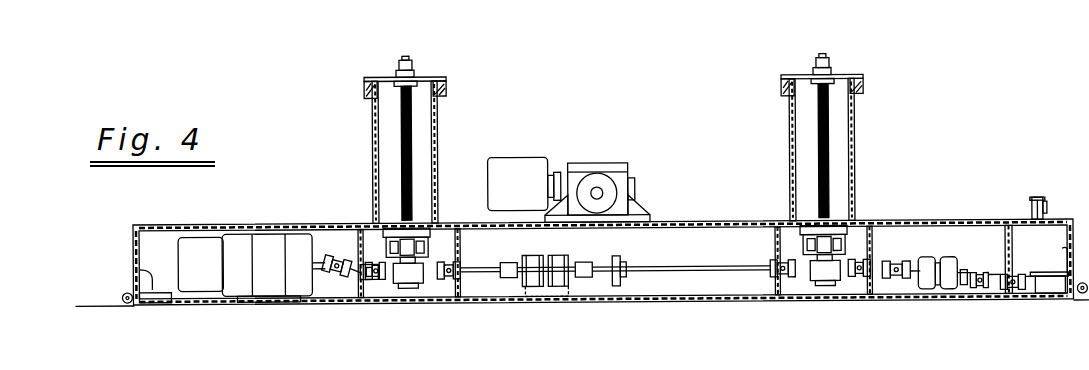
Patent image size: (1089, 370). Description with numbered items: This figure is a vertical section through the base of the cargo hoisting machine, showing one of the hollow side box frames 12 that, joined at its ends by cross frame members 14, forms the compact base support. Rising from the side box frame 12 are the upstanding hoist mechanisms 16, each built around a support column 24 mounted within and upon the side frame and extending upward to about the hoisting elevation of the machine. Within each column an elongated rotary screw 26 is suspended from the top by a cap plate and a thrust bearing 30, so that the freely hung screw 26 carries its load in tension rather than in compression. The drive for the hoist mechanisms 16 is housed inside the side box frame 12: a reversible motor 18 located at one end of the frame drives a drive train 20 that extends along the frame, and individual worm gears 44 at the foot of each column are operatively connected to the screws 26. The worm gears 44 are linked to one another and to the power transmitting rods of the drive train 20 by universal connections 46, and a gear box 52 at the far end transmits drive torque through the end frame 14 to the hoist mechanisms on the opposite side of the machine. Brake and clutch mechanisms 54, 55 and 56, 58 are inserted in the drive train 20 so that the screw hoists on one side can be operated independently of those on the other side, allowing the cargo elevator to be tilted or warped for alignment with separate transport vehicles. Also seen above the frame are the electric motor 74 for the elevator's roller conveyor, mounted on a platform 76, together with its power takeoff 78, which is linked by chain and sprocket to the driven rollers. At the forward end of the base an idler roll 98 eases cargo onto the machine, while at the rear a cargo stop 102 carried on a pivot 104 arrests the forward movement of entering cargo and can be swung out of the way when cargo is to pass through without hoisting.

The side box frame 12 is at (735, 226).
The cross frame member 14 is at (150, 278).
The hoist mechanism 16 is at (619, 130).
The motor 18 is at (276, 274).
The drive train 20 is at (694, 284).
The support column 24 is at (373, 152).
The rotary screw 26 is at (412, 137).
The thrust bearing 30 is at (396, 78).
The worm gear 44 is at (408, 277).
The universal connection 46 is at (447, 283).
The gear box 52 is at (1058, 299).
The brake and clutch mechanism 54 is at (535, 258).
The brake and clutch mechanism 55 is at (557, 258).
The brake and clutch mechanism 56 is at (927, 262).
The brake and clutch mechanism 58 is at (950, 262).
The electric motor 74 is at (528, 195).
The platform 76 is at (650, 221).
The power takeoff 78 is at (618, 168).
The idler roll 98 is at (122, 297).
The cargo stop 102 is at (1040, 203).
The pivot 104 is at (1047, 211).